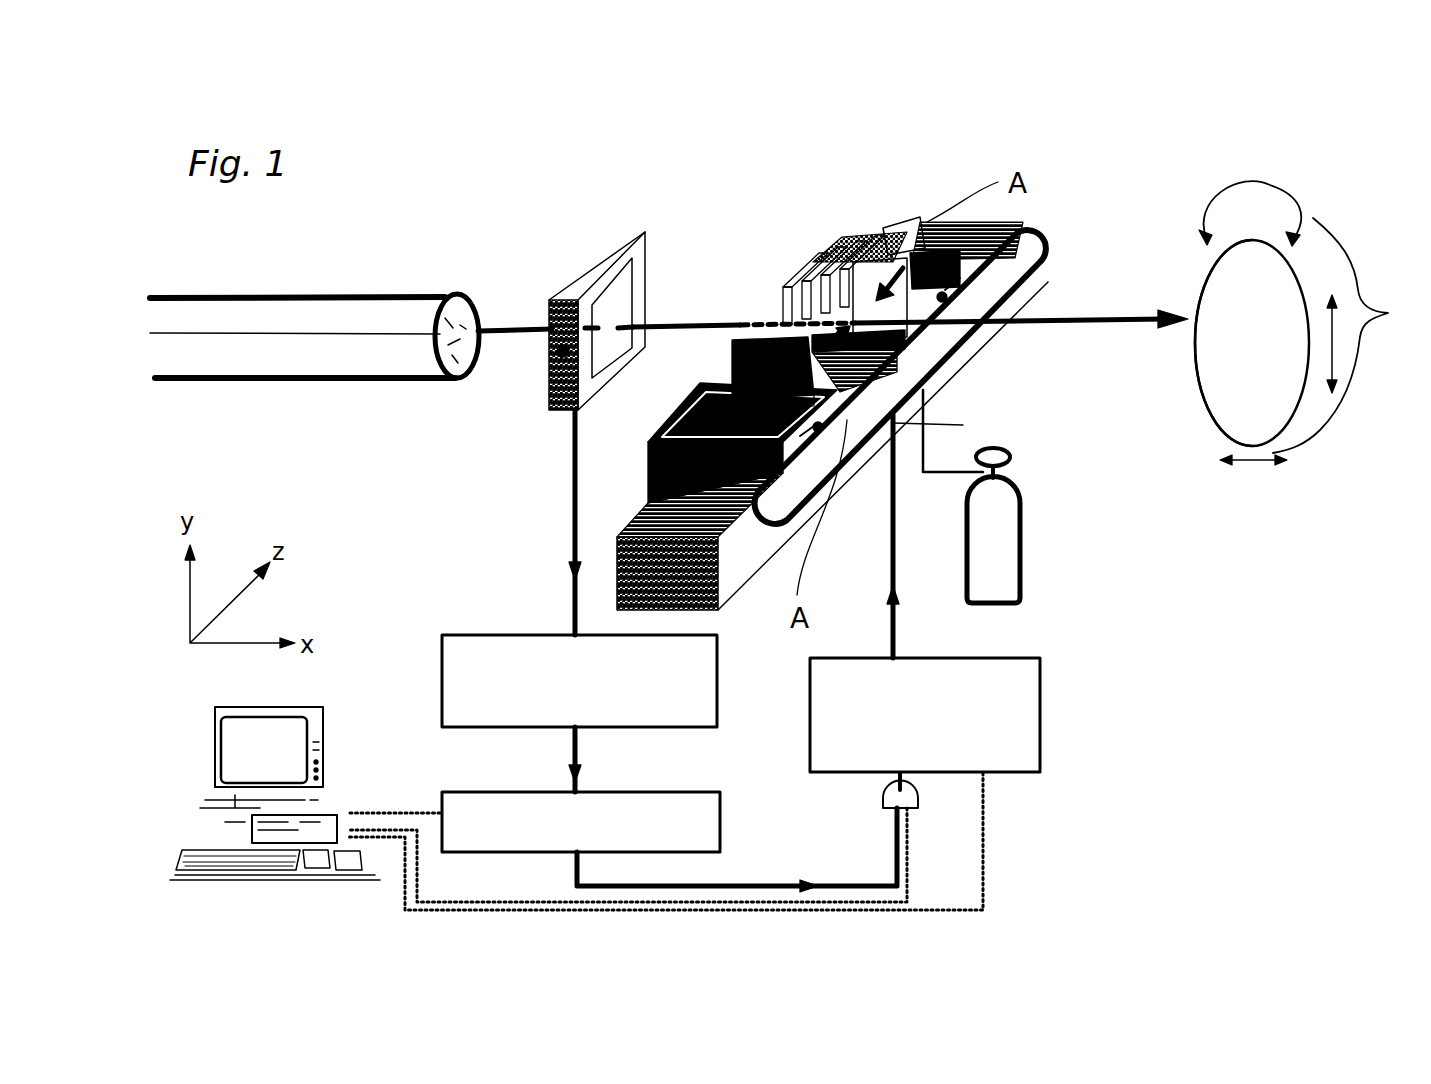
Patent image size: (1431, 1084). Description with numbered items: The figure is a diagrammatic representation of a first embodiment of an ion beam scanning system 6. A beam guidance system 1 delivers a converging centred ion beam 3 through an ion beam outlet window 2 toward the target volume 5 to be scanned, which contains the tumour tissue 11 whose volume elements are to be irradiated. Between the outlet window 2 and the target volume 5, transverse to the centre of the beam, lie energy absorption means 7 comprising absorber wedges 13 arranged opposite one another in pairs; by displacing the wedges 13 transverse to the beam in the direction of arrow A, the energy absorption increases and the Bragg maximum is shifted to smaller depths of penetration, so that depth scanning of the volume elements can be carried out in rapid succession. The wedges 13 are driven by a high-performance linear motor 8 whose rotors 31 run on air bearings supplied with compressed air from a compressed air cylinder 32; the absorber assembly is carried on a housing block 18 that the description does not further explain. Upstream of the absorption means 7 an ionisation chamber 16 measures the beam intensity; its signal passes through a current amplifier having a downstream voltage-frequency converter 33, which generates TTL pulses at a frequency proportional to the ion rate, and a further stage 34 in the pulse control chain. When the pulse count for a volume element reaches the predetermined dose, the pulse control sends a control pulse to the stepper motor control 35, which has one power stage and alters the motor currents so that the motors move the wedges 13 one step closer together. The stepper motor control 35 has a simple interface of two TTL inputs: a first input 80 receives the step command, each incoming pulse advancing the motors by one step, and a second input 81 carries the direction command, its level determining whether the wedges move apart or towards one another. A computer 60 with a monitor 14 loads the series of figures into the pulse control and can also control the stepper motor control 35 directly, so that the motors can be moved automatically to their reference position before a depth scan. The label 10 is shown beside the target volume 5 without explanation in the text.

The beam guidance system 1 is at (236, 297).
The ion beam outlet window 2 is at (477, 312).
The converging centred ion beam 3 is at (690, 323).
The target volume 5 is at (1221, 386).
The scanning system 6 is at (1308, 317).
The energy absorption means 7 is at (830, 246).
The linear motor 8 is at (1040, 293).
The workpiece adjustment 10 is at (1343, 477).
The tumour tissue 11 is at (1205, 349).
The absorber wedges 13 is at (812, 264).
The monitor 14 is at (327, 745).
The ionisation chamber 16 is at (622, 242).
The housing block 18 is at (900, 247).
The rotors 31 is at (943, 345).
The compressed air cylinder 32 is at (1007, 533).
The current amplifier having a downstream voltage-frequency converter 33 is at (705, 672).
The evaluation unit 34 is at (705, 800).
The stepper motor control 35 is at (1025, 675).
The computer 60 is at (333, 765).
The first input 80 is at (903, 780).
The second input 81 is at (984, 776).